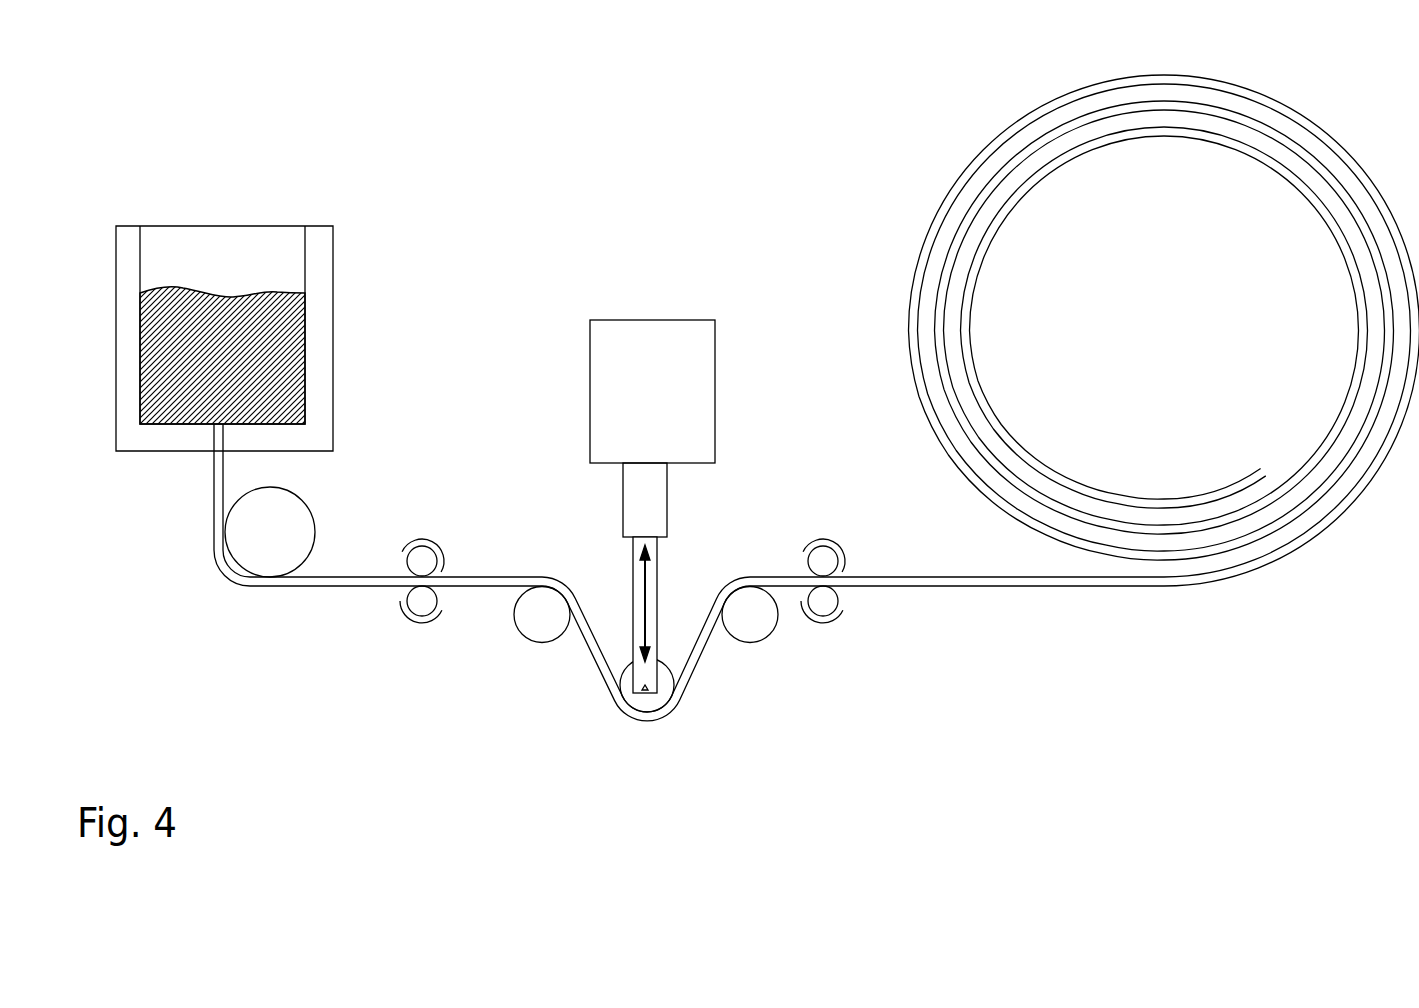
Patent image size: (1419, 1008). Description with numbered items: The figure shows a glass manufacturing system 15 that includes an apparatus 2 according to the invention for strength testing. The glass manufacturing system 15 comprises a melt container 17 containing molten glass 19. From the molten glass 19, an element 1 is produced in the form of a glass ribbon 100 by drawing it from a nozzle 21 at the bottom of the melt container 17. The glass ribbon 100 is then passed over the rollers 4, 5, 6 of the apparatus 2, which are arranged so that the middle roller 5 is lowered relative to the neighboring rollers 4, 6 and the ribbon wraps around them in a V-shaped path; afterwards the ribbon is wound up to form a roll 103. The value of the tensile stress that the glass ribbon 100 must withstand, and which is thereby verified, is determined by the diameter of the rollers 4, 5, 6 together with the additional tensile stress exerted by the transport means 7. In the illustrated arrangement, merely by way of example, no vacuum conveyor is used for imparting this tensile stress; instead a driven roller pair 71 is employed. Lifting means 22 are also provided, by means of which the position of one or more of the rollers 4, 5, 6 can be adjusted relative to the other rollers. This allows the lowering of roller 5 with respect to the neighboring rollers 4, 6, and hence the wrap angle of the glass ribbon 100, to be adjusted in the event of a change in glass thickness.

The element 1 is at (689, 635).
The glass ribbon 100 is at (905, 588).
The apparatus 2 is at (601, 703).
The roller 4 is at (512, 630).
The roller 5 is at (650, 670).
The roller 6 is at (740, 637).
The transport means 7 is at (811, 594).
The driven roller pair 71 is at (808, 548).
The glass manufacturing system 15 is at (660, 142).
The melt container 17 is at (315, 310).
The molten glass 19 is at (213, 305).
The nozzle 21 is at (198, 453).
The lifting means 22 is at (694, 406).
The roll 103 is at (982, 138).